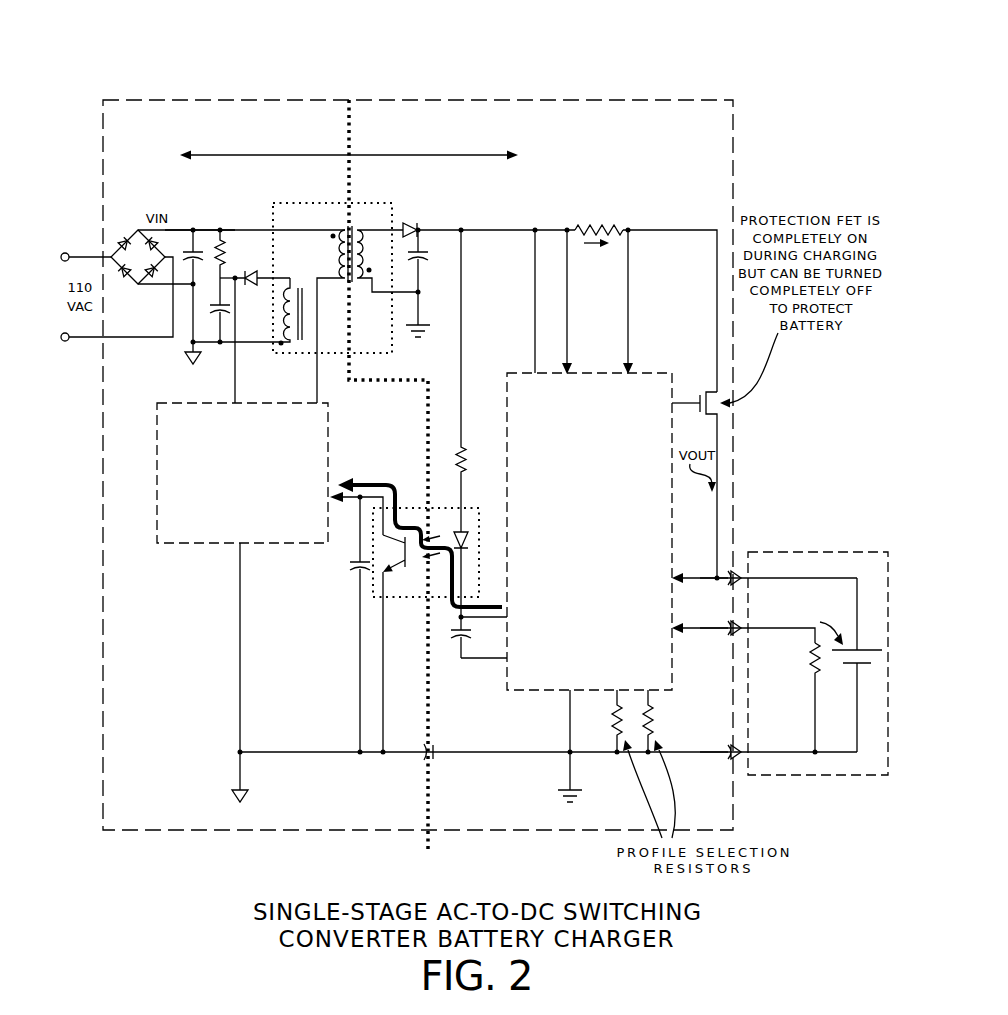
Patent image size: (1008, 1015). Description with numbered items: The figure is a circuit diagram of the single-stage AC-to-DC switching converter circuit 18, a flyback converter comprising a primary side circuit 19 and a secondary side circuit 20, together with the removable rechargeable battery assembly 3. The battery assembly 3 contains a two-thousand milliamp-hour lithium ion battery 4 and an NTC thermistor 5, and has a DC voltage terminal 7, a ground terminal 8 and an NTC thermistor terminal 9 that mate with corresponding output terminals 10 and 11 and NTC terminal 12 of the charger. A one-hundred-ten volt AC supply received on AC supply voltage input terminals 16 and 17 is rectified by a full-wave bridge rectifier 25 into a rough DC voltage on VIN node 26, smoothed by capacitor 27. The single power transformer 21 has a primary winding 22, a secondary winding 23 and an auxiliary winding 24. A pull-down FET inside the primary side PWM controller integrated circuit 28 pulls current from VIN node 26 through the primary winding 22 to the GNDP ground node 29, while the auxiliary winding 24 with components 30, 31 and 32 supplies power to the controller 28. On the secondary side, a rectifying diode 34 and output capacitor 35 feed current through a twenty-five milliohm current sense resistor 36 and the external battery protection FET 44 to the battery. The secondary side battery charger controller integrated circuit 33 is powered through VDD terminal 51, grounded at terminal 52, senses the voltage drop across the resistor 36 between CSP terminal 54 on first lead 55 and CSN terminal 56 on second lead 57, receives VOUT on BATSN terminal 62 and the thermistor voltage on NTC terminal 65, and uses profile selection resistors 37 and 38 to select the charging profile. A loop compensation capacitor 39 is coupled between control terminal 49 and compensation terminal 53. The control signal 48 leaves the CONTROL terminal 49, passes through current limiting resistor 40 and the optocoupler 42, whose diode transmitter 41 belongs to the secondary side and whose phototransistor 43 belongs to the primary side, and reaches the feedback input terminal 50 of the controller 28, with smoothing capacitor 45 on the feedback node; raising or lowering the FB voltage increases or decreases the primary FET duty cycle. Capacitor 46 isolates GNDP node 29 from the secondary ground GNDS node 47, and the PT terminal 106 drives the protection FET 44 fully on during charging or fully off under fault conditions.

The rechargeable battery assembly 3 is at (818, 613).
The rechargeable lithium ion battery 4 is at (867, 648).
The NTC thermistor 5 is at (820, 672).
The DC voltage terminal 7 is at (746, 577).
The ground terminal 8 is at (746, 750).
The NTC thermistor terminal 9 is at (746, 626).
The output terminal 10 is at (727, 582).
The output terminal 11 is at (727, 748).
The NTC terminal 12 is at (727, 632).
The AC supply voltage input terminal 16 is at (67, 253).
The AC supply voltage input terminal 17 is at (67, 341).
The single-stage AC-to-DC switching converter circuit 18 is at (408, 100).
The primary side circuit 19 is at (264, 139).
The secondary side circuit 20 is at (435, 139).
The power transformer 21 is at (311, 203).
The primary winding 22 is at (339, 252).
The secondary winding 23 is at (362, 250).
The auxiliary winding 24 is at (284, 308).
The full-wave bridge rectifier 25 is at (129, 266).
The VIN node 26 is at (194, 230).
The smoothing capacitor 27 is at (200, 259).
The primary side pulse-width modulator controller integrated circuit 28 is at (230, 496).
The GNDP ground node 29 is at (288, 751).
The power supply circuit component 30 is at (252, 272).
The power supply circuit component 31 is at (226, 250).
The power supply circuit component 32 is at (216, 312).
The secondary side battery charger controller integrated circuit 33 is at (575, 581).
The rectifying diode 34 is at (412, 223).
The output capacitor 35 is at (427, 259).
The current sense resistor 36 is at (587, 228).
The profile selection resistor 37 is at (611, 733).
The profile selection resistor 38 is at (653, 733).
The loop compensation capacitor 39 is at (456, 644).
The current limiting resistor 40 is at (467, 456).
The diode transmitter 41 is at (472, 546).
The optocoupler 42 is at (446, 508).
The phototransistor 43 is at (394, 572).
The external battery protection Field Effect Transistor 44 is at (699, 393).
The smoothing capacitor 45 is at (350, 571).
The capacitor 46 is at (435, 748).
The GNDS node 47 is at (499, 750).
The control signal 48 is at (380, 483).
The control terminal 49 is at (505, 620).
The feedback input terminal 50 is at (334, 499).
The VDD terminal 51 is at (535, 373).
The ground terminal 52 is at (564, 695).
The compensation terminal 53 is at (505, 662).
The CSP terminal 54 is at (571, 370).
The first lead of the current sense resistor 55 is at (570, 229).
The CSN terminal 56 is at (632, 370).
The second lead of the current sense resistor 57 is at (626, 229).
The BATSN terminal 62 is at (684, 583).
The NTC terminal 65 is at (684, 632).
The PT terminal 106 is at (676, 403).